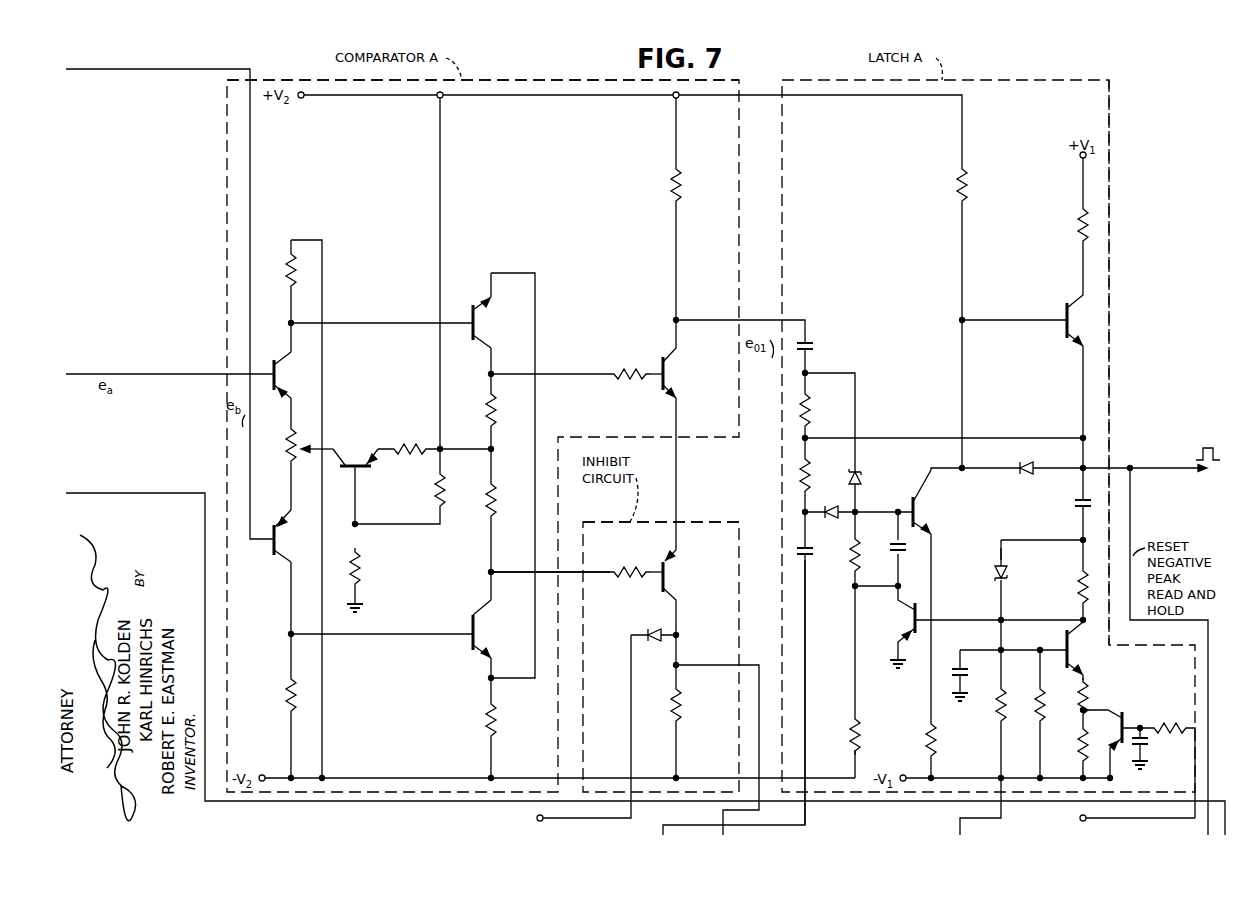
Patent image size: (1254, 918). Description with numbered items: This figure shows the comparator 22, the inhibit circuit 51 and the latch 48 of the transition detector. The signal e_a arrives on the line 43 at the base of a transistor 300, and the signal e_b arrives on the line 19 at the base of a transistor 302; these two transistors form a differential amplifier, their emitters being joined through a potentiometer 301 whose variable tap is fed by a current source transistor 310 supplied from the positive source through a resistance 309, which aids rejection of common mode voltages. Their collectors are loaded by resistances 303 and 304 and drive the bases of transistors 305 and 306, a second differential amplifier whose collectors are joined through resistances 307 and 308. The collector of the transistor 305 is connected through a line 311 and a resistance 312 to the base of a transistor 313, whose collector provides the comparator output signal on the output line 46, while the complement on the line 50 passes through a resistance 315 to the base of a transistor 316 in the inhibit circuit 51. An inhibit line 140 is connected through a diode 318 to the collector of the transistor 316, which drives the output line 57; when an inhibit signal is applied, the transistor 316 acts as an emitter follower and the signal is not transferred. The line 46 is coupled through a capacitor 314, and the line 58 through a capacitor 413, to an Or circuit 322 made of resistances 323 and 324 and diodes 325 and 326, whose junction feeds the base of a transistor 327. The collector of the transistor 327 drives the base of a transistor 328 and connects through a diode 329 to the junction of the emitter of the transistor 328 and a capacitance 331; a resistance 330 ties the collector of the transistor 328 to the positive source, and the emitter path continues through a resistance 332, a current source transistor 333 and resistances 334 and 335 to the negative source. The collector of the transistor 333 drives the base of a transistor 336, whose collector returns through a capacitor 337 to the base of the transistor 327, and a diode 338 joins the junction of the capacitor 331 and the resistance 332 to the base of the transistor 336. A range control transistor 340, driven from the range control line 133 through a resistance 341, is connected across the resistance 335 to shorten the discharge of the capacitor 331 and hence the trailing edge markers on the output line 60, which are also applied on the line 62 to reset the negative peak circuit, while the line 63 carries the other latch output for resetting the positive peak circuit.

The line 19 is at (154, 69).
The comparator 22 is at (528, 80).
The line 43 is at (150, 374).
The output line 46 is at (742, 320).
The latch 48 is at (1110, 108).
The line 50 is at (572, 572).
The inhibit circuit 51 is at (616, 522).
The output line 57 is at (744, 665).
The line 58 is at (806, 704).
The output line 60 is at (1152, 468).
The line 62 is at (1132, 535).
The line 63 is at (192, 496).
The range control line 133 is at (1108, 818).
The inhibit line 140 is at (562, 818).
The transistor 300 is at (270, 372).
The potentiometer 301 is at (292, 432).
The transistor 302 is at (276, 558).
The resistance 303 is at (290, 272).
The resistance 304 is at (287, 688).
The transistor 305 is at (476, 310).
The transistor 306 is at (474, 614).
The resistance 307 is at (488, 410).
The resistance 308 is at (496, 498).
The resistance 309 is at (403, 449).
The transistor 310 is at (358, 478).
The line 311 is at (496, 374).
The resistance 312 is at (614, 362).
The transistor 313 is at (656, 360).
The capacitor 314 is at (813, 347).
The resistance 315 is at (628, 572).
The transistor 316 is at (662, 562).
The diode 318 is at (654, 626).
The Or circuit 322 is at (850, 430).
The resistance 323 is at (810, 406).
The resistance 324 is at (810, 478).
The diode 325 is at (860, 474).
The diode 326 is at (828, 520).
The transistor 327 is at (912, 500).
The transistor 328 is at (1064, 306).
The diode 329 is at (1030, 466).
The resistance 330 is at (1080, 220).
The capacitance 331 is at (1074, 500).
The resistance 332 is at (1078, 574).
The transistor 333 is at (1066, 642).
The resistance 334 is at (1086, 684).
The resistance 335 is at (1080, 730).
The transistor 336 is at (910, 622).
The capacitor 337 is at (892, 560).
The diode 338 is at (994, 570).
The range control transistor 340 is at (1124, 712).
The resistance 341 is at (1148, 722).
The capacitor 413 is at (810, 562).